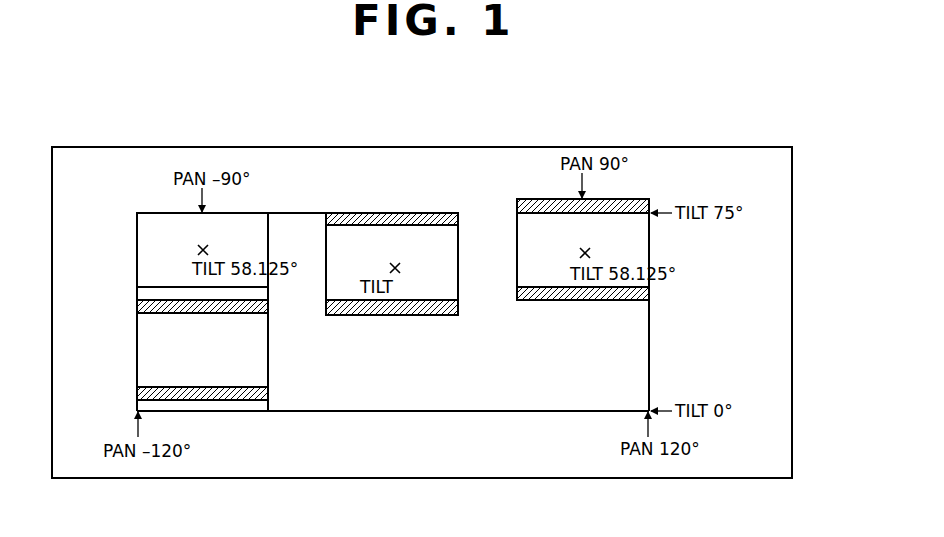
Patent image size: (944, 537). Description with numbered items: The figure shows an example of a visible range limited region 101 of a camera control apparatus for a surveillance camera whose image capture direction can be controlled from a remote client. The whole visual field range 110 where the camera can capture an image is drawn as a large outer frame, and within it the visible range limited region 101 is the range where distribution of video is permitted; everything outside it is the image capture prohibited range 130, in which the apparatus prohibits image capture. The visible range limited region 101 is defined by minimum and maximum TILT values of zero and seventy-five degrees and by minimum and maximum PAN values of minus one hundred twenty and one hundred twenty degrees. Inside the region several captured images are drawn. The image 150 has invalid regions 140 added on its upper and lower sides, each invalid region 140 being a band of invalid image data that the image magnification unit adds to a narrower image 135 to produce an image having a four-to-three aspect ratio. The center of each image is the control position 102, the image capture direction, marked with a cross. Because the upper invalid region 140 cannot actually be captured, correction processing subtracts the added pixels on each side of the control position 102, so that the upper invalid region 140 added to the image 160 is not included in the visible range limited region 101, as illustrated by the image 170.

The visual field range 110 is at (730, 147).
The image capture prohibited range 130 is at (778, 336).
The visible range limited region 101 is at (318, 412).
The image 170 is at (137, 238).
The 480×270 pixel image 135 is at (268, 352).
The image 150 is at (455, 277).
The image 160 is at (521, 253).
The invalid region 140 is at (137, 308).
The control position 102 is at (210, 242).